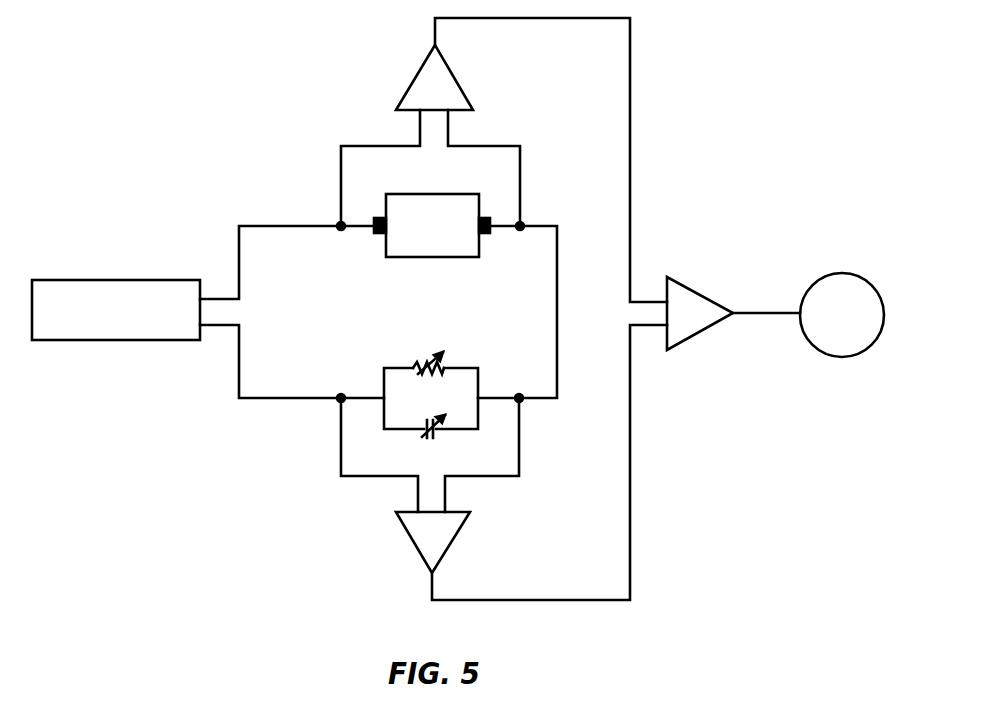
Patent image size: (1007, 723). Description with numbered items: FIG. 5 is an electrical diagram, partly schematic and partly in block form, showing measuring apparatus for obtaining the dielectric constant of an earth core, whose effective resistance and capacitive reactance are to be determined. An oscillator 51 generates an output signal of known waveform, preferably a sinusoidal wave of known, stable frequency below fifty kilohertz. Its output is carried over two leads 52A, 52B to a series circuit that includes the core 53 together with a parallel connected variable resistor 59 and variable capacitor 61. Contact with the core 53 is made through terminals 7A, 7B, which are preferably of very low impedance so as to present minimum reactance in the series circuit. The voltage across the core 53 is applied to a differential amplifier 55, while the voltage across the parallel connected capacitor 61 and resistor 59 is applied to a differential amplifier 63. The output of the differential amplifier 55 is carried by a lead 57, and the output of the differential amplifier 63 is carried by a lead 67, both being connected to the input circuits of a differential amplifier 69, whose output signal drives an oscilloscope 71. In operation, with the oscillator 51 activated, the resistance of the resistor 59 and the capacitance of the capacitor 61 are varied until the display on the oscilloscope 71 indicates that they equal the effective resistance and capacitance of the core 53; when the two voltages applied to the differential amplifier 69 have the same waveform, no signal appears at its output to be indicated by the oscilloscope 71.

The oscillator 51 is at (145, 279).
The oscillator output lead 52A is at (239, 283).
The oscillator output lead 52B is at (239, 357).
The core 53 is at (430, 259).
The terminal 7A is at (378, 234).
The terminal 7B is at (489, 238).
The differential amplifier 55 is at (448, 72).
The output lead of differential amplifier 55 57 is at (630, 97).
The variable resistor 59 is at (444, 357).
The variable capacitor 61 is at (435, 431).
The differential amplifier 63 is at (407, 529).
The output lead of differential amplifier 63 67 is at (530, 599).
The differential amplifier 69 is at (685, 340).
The oscilloscope 71 is at (826, 351).